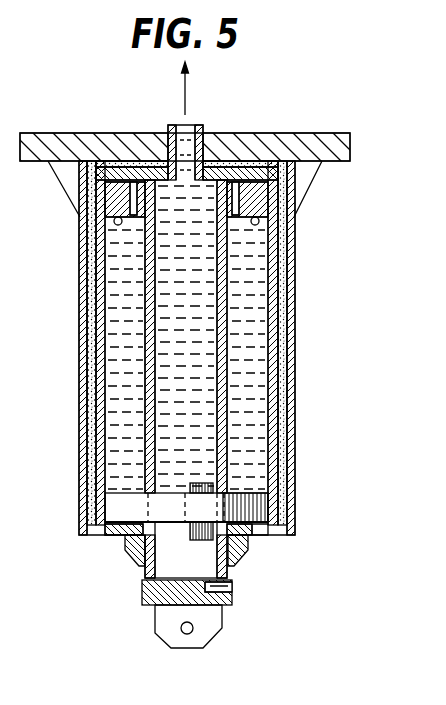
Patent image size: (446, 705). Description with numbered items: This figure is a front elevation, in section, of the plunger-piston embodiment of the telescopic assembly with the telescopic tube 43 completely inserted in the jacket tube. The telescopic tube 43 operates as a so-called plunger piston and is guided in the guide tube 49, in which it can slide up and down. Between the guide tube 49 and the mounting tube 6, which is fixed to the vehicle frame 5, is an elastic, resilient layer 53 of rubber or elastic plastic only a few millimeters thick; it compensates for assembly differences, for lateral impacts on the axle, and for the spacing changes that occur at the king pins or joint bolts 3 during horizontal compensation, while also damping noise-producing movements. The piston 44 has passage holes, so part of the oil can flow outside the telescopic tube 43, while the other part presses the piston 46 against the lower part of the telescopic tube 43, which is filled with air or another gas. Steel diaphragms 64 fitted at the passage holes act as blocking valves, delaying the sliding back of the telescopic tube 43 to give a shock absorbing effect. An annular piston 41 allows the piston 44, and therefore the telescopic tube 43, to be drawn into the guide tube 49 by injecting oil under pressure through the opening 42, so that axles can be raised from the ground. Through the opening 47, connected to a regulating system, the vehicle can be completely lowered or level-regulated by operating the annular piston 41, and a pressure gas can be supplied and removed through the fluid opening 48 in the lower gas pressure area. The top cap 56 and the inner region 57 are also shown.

The vehicle frame 5 is at (86, 142).
The opening 47 is at (192, 126).
The top cap seal 56 is at (240, 183).
The piston 44 is at (106, 200).
The steel diaphragms 64 is at (114, 224).
The mounting tube 6 is at (80, 287).
The inner tube 57 is at (117, 424).
The elastic resilient layer 53 is at (282, 433).
The guide tube 49 is at (291, 470).
The annular piston 41 is at (113, 514).
The telescopic tube 43 is at (146, 560).
The piston 46 is at (175, 532).
The opening 42 is at (258, 540).
The fluid opening 48 is at (233, 588).
The king pins or joint bolts 3 is at (182, 631).